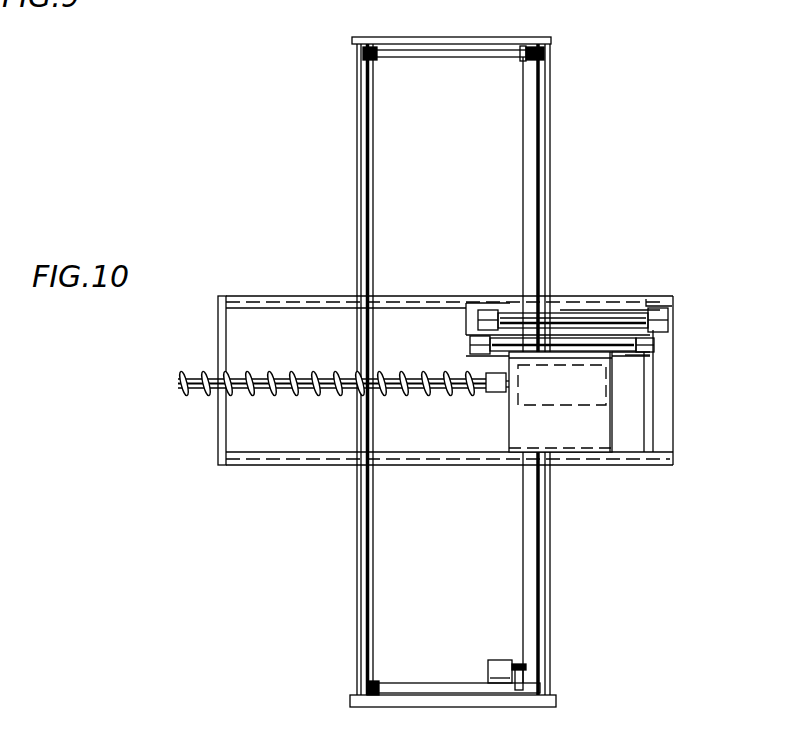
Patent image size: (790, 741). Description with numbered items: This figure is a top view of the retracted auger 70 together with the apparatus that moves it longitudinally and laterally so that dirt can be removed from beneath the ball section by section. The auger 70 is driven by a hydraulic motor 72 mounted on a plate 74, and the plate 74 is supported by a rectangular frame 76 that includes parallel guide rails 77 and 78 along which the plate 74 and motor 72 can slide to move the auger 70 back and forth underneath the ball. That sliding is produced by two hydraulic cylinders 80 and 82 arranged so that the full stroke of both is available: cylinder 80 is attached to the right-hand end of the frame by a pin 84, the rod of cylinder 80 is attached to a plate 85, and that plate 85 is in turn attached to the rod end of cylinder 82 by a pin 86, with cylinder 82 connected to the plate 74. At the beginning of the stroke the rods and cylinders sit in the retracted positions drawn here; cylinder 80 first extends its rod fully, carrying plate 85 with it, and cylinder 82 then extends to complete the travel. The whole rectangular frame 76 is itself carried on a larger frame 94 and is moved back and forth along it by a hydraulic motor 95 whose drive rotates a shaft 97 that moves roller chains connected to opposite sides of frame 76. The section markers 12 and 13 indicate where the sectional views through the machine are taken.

The section line 12- 12 is at (538, 26).
The section line 13- 13 is at (651, 270).
The auger 70 is at (296, 366).
The hydraulic motor 72 is at (560, 398).
The plate 74 is at (588, 446).
The rectangular frame 76 is at (445, 372).
The guide rail 77 is at (320, 297).
The guide rail 78 is at (288, 456).
The hydraulic cylinder 80 is at (568, 318).
The hydraulic cylinder 82 is at (618, 347).
The pin 84 is at (660, 305).
The plate 85 is at (473, 303).
The pin 86 is at (655, 335).
The frame 94 is at (556, 582).
The hydraulic motor 95 is at (498, 660).
The shaft 97 is at (426, 686).